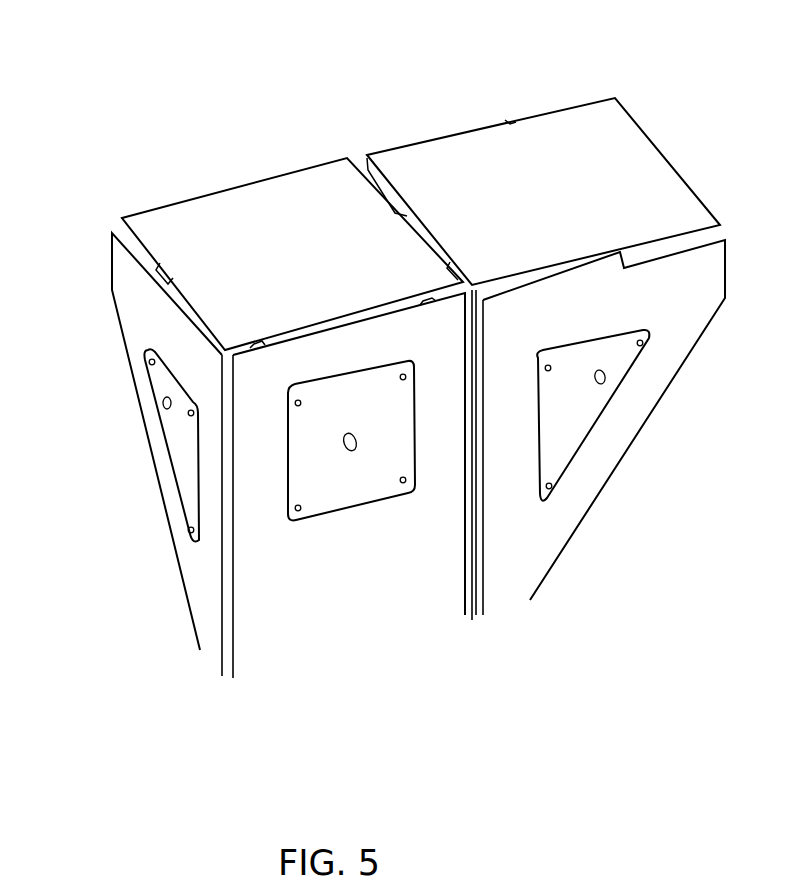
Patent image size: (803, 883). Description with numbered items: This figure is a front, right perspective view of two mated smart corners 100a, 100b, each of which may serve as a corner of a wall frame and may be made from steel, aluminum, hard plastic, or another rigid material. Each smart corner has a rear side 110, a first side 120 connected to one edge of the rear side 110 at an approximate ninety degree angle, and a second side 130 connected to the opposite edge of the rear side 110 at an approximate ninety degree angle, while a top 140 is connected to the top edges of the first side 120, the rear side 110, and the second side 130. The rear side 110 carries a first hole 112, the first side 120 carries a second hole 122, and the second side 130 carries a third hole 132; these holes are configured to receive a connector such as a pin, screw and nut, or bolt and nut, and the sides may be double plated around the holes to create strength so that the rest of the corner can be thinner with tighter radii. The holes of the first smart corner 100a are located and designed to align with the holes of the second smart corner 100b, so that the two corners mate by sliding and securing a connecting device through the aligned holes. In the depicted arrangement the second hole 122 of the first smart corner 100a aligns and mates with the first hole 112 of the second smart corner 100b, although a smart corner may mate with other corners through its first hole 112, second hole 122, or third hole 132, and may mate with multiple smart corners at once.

The first smart corner 100a is at (254, 434).
The second smart corner 100b is at (549, 316).
The rear side 110 is at (349, 514).
The first hole 112 is at (357, 452).
The first side 120 is at (598, 430).
The second hole 122 is at (607, 378).
The second side 130 is at (148, 454).
The third hole 132 is at (165, 405).
The top 140 is at (240, 205).